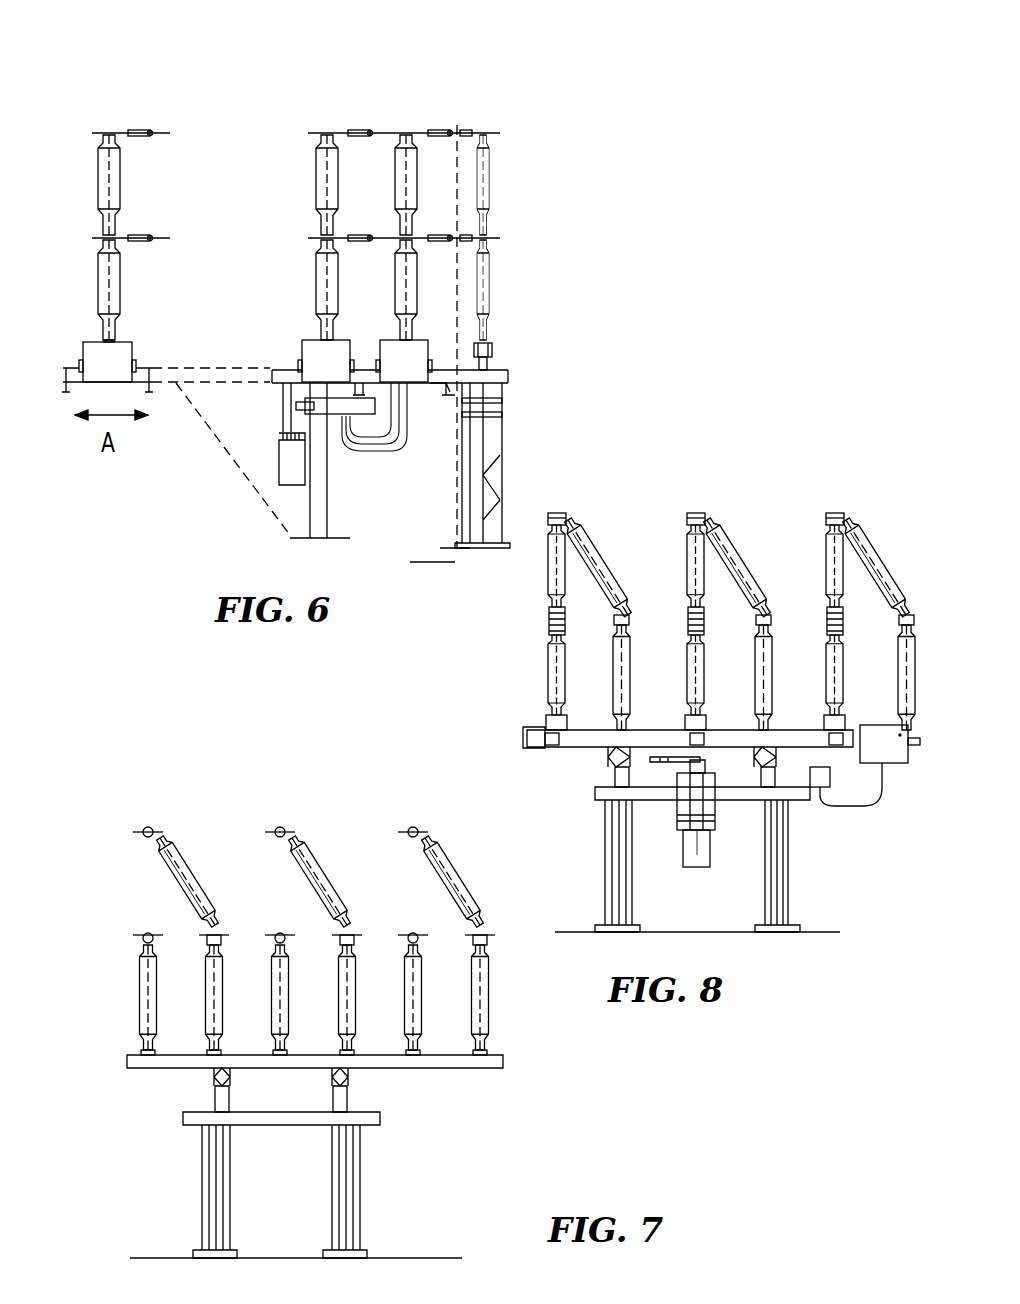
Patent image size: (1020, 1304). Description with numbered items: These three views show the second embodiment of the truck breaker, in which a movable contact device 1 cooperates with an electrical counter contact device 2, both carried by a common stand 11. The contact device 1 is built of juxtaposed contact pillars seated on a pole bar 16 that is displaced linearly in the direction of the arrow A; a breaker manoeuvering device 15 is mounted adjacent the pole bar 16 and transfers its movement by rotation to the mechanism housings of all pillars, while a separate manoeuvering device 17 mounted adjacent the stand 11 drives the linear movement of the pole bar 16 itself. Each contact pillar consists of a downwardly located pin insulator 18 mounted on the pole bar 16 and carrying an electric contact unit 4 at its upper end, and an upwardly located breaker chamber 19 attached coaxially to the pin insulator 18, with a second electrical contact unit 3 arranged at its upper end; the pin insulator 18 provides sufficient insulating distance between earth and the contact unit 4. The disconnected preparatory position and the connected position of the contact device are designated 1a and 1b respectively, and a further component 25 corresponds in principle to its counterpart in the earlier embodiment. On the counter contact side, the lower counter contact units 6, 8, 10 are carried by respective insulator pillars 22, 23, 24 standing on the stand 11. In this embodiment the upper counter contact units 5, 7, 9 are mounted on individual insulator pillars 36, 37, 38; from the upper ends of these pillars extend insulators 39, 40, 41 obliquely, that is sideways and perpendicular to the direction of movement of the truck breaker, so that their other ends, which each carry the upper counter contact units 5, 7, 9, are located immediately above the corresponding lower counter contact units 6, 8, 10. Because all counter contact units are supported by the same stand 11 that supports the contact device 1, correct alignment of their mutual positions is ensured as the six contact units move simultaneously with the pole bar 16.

In FIG. 6, the contact device 1 is at (125, 212).
In FIG. 6, the disconnected preparatory position 1a is at (330, 113).
In FIG. 6, the connected position 1b is at (396, 211).
In FIG. 6, the counter contact device 2 is at (484, 82).
In FIG. 6, the second electrical contact unit 3 is at (144, 132).
In FIG. 6, the electric contact unit 4 is at (148, 236).
In FIG. 6, the upper counter contact unit 5 is at (492, 133).
In FIG. 7, the upper counter contact unit 5 is at (152, 828).
In FIG. 6, the lower counter contact unit 6 is at (492, 238).
In FIG. 7, the lower counter contact unit 6 is at (143, 934).
In FIG. 7, the upper counter contact unit 7 is at (285, 828).
In FIG. 7, the lower counter contact unit 8 is at (275, 934).
In FIG. 7, the upper counter contact unit 9 is at (418, 828).
In FIG. 7, the lower counter contact unit 10 is at (408, 934).
In FIG. 6, the stand 11 is at (329, 466).
In FIG. 8, the stand 11 is at (795, 862).
In FIG. 7, the stand 11 is at (383, 1190).
In FIG. 6, the breaker manoeuvering device 15 is at (118, 350).
In FIG. 6, the pole bar 16 is at (393, 356).
In FIG. 8, the pole bar 16 is at (894, 766).
In FIG. 6, the manoeuvering device 17 is at (306, 467).
In FIG. 8, the manoeuvering device 17 is at (712, 858).
In FIG. 6, the pin insulator 18 is at (121, 295).
In FIG. 6, the breaker chamber 19 is at (121, 171).
In FIG. 8, the breaker chamber 19 is at (547, 584).
In FIG. 6, the insulator pillar 22 is at (484, 295).
In FIG. 8, the insulator pillar 22 is at (551, 690).
In FIG. 7, the insulator pillar 22 is at (140, 1017).
In FIG. 8, the insulator pillar 23 is at (691, 692).
In FIG. 7, the insulator pillar 23 is at (273, 1017).
In FIG. 8, the insulator pillar 24 is at (830, 692).
In FIG. 7, the insulator pillar 24 is at (406, 1017).
In FIG. 6, the component 25 is at (492, 362).
In FIG. 8, the insulator pillar 36 is at (618, 657).
In FIG. 7, the insulator pillar 36 is at (206, 987).
In FIG. 8, the insulator pillar 37 is at (760, 657).
In FIG. 7, the insulator pillar 37 is at (339, 987).
In FIG. 8, the insulator pillar 38 is at (902, 657).
In FIG. 7, the insulator pillar 38 is at (472, 987).
In FIG. 8, the oblique insulator 39 is at (603, 565).
In FIG. 7, the oblique insulator 39 is at (170, 848).
In FIG. 8, the oblique insulator 40 is at (742, 565).
In FIG. 7, the oblique insulator 40 is at (302, 848).
In FIG. 8, the oblique insulator 41 is at (882, 565).
In FIG. 7, the oblique insulator 41 is at (434, 848).